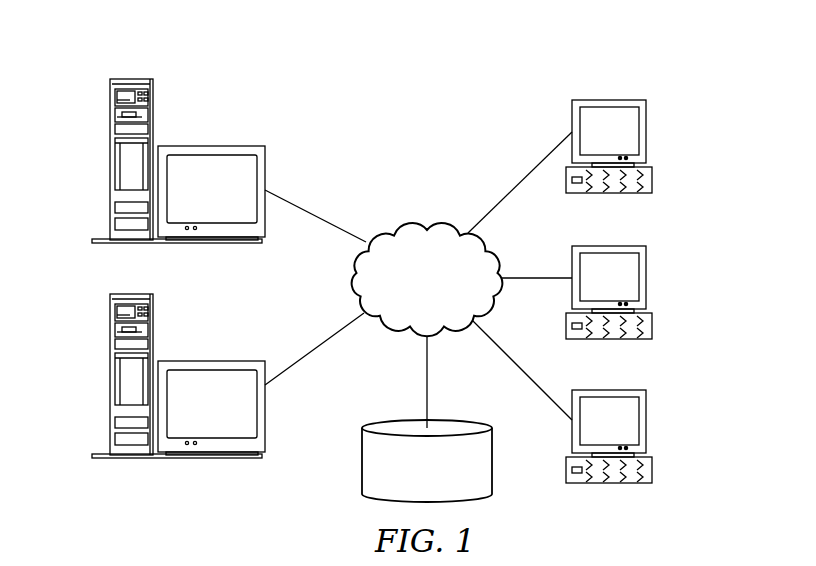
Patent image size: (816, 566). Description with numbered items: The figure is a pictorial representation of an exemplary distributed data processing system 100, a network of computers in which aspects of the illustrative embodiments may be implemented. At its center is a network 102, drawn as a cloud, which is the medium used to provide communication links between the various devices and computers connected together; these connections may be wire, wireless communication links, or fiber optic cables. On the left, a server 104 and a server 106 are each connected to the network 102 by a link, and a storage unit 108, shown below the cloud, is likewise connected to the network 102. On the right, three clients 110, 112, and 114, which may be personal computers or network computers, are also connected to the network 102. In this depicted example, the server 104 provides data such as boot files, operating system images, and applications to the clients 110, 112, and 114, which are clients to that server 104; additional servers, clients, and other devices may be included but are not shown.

The distributed data processing system 100 is at (481, 89).
The network 102 is at (398, 228).
The server 104 is at (110, 162).
The server 106 is at (110, 375).
The storage unit 108 is at (362, 460).
The client 110 is at (646, 131).
The client 112 is at (646, 277).
The client 114 is at (646, 420).